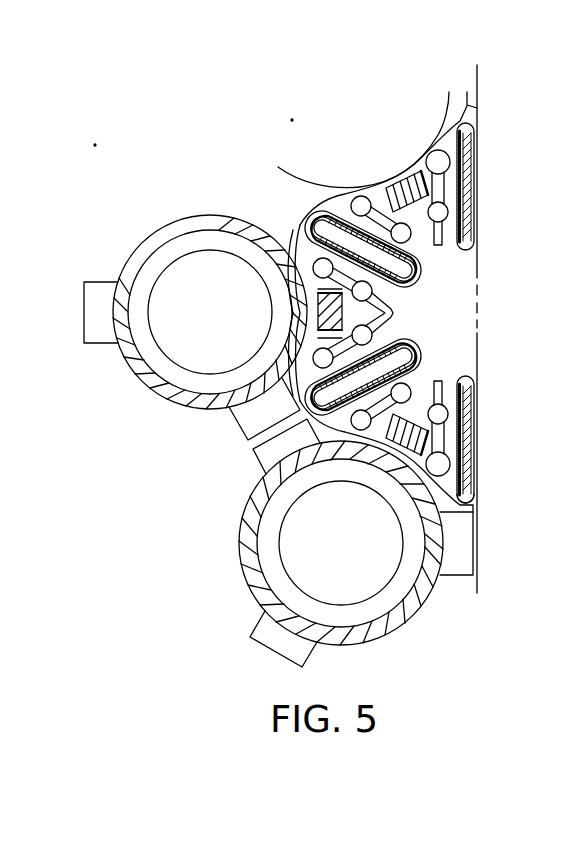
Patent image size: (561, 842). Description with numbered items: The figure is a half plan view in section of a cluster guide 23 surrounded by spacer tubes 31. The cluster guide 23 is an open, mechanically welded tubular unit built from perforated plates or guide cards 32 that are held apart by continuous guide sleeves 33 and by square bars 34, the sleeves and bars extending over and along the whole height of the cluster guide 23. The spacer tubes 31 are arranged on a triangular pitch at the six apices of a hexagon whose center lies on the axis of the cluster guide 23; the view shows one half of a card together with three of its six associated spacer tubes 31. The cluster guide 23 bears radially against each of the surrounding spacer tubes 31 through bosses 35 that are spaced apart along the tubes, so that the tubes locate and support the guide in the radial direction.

The cluster guide 23 is at (477, 187).
The spacer tube 31 is at (210, 228).
The guide card 32 is at (462, 385).
The guide sleeve 33 is at (408, 333).
The square bar 34 is at (417, 447).
The boss 35 is at (466, 497).